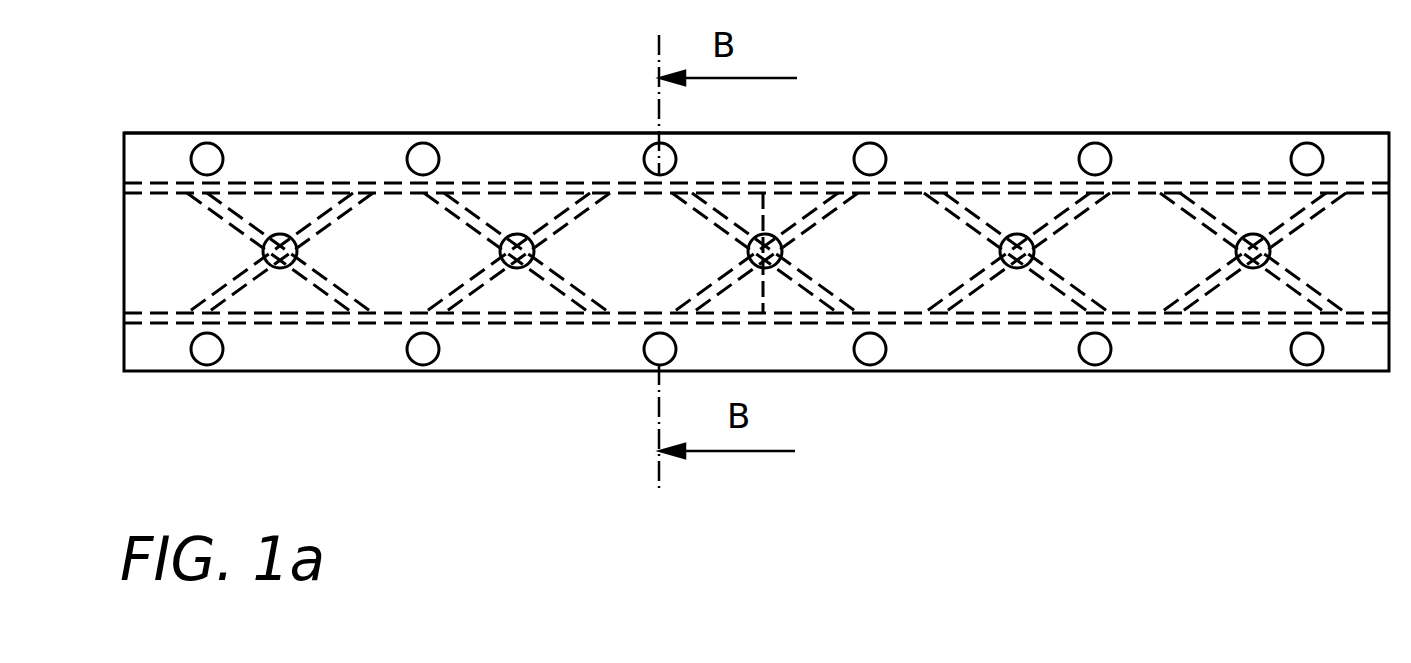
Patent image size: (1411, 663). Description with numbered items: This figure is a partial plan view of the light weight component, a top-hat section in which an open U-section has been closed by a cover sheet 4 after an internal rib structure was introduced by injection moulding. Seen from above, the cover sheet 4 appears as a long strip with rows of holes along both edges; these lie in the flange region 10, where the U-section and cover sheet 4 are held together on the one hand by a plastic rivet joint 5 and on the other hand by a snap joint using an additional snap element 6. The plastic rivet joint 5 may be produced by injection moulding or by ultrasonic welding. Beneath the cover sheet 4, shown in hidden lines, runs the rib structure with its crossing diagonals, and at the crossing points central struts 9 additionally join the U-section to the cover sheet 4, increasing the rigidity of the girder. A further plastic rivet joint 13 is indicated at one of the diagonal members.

The cover sheet 4 is at (970, 372).
The plastic rivet joint 5 is at (406, 160).
The snap element 6 is at (644, 350).
The central struts 9 is at (497, 249).
The flange region 10 is at (563, 155).
The plastic rivet joint 13 is at (1282, 276).